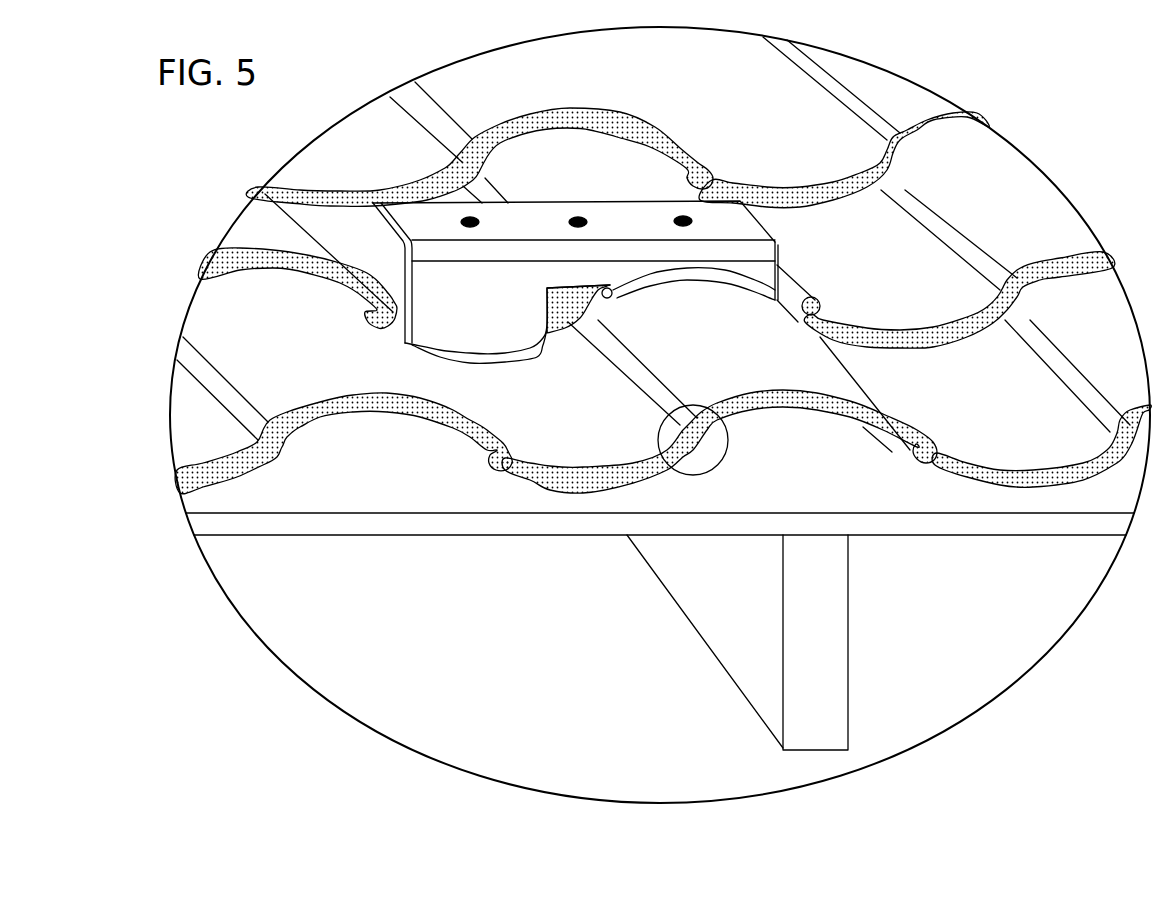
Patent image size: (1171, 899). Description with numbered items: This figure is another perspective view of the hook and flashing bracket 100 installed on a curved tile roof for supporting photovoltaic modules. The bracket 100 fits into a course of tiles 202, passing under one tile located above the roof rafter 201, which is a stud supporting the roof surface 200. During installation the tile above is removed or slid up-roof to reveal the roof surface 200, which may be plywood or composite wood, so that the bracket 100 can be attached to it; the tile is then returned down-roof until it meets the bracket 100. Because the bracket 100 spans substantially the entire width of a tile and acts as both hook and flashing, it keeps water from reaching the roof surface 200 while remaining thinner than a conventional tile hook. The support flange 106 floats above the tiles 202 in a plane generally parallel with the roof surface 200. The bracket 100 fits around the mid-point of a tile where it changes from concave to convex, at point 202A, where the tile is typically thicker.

The hook and flashing bracket 100 is at (575, 372).
The support flange 106 is at (728, 220).
The roof surface 200 is at (973, 503).
The roof rafter 201 is at (828, 673).
The tiles 202 is at (982, 202).
The point where the tile changes from concave to convex 202A is at (693, 478).